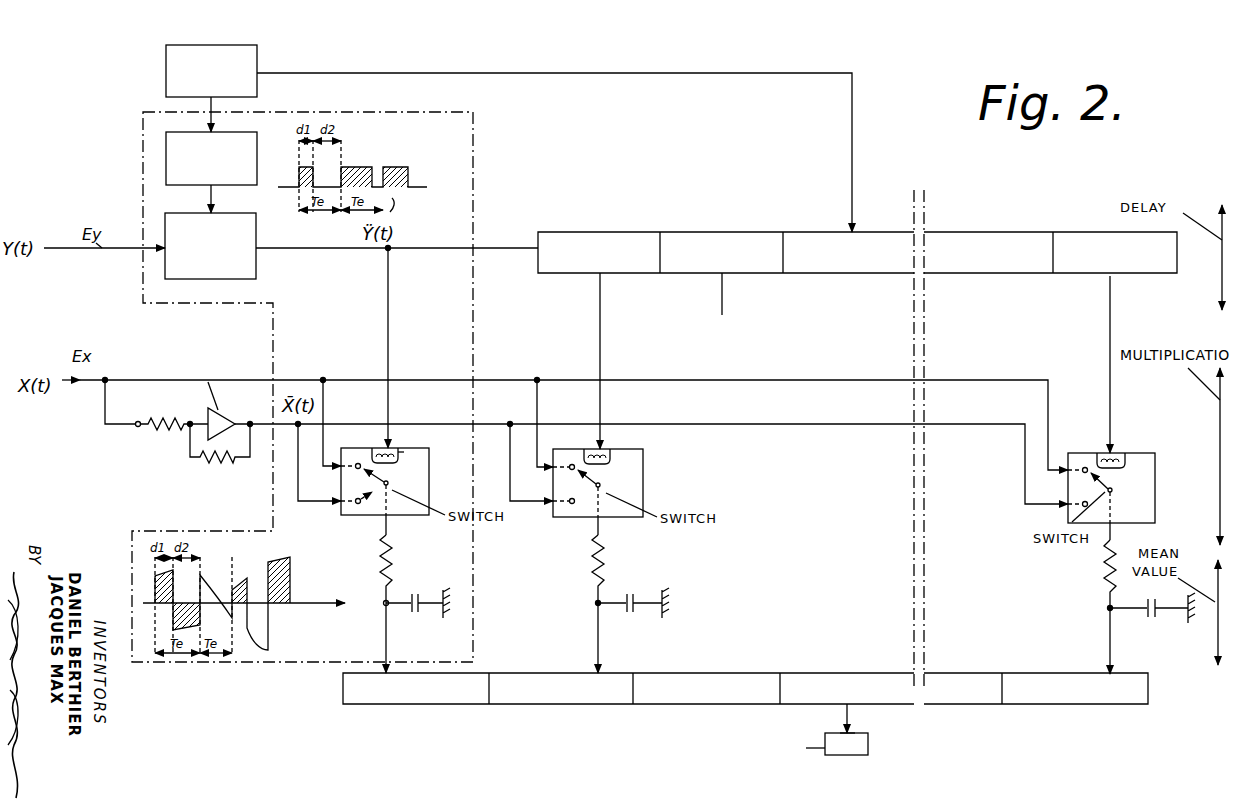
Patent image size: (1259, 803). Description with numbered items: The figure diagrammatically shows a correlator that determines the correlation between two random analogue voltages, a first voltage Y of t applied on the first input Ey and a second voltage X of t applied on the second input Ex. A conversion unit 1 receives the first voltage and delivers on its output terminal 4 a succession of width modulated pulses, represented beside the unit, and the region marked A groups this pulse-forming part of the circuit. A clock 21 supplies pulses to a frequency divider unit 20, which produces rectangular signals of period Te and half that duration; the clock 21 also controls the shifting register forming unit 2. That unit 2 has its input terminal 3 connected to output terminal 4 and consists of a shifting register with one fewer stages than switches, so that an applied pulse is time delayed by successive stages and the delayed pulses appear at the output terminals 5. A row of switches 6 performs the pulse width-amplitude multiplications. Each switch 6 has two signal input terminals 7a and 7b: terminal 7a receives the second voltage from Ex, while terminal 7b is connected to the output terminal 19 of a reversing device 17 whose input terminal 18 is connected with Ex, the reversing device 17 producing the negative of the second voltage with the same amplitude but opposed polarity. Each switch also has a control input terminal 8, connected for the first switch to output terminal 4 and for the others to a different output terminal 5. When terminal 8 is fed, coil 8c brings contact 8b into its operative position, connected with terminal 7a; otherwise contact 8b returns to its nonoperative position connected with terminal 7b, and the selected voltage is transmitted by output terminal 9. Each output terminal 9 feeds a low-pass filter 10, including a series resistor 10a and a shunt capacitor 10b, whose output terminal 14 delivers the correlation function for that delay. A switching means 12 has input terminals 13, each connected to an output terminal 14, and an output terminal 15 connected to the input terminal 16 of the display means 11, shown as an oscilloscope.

The conversion unit 1 is at (257, 258).
The delay unit 2 is at (826, 232).
The input terminal of unit 2 3 is at (536, 247).
The output terminal of conversion unit 4 is at (257, 247).
The output terminals of unit 2 5 is at (600, 274).
The switch 6 is at (429, 468).
The signal input terminal 7a is at (351, 462).
The signal input terminal 7b is at (340, 503).
The switch control input terminal 8 is at (394, 448).
The contact 8b is at (389, 482).
The coil 8c is at (400, 458).
The output terminal of switch 9 is at (390, 520).
The low-pass filter 10 is at (395, 592).
The resistor 10a is at (380, 575).
The capacitor 10b is at (413, 616).
The display means 11 is at (868, 745).
The switching means 12 is at (686, 673).
The input terminals of switching means 13 is at (597, 672).
The output terminal of low-pass filter 14 is at (382, 607).
The output terminal of switching means 15 is at (845, 708).
The input terminal of display means 16 is at (852, 733).
The reversing device 17 is at (222, 415).
The input terminal of reversing device 18 is at (136, 426).
The output terminal of reversing device 19 is at (249, 446).
The frequency divider unit 20 is at (218, 187).
The clock 21 is at (166, 72).
The pulse generating assembly A is at (473, 165).